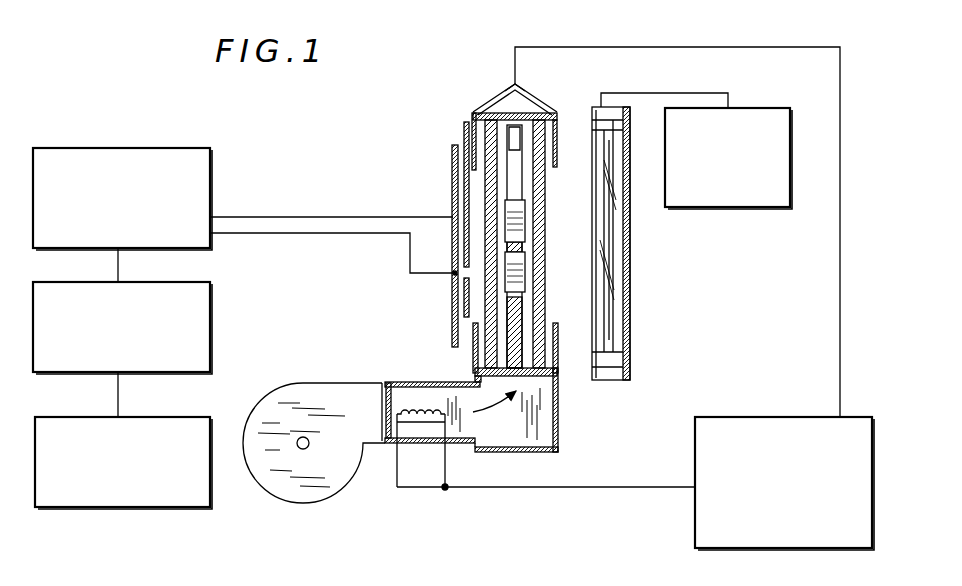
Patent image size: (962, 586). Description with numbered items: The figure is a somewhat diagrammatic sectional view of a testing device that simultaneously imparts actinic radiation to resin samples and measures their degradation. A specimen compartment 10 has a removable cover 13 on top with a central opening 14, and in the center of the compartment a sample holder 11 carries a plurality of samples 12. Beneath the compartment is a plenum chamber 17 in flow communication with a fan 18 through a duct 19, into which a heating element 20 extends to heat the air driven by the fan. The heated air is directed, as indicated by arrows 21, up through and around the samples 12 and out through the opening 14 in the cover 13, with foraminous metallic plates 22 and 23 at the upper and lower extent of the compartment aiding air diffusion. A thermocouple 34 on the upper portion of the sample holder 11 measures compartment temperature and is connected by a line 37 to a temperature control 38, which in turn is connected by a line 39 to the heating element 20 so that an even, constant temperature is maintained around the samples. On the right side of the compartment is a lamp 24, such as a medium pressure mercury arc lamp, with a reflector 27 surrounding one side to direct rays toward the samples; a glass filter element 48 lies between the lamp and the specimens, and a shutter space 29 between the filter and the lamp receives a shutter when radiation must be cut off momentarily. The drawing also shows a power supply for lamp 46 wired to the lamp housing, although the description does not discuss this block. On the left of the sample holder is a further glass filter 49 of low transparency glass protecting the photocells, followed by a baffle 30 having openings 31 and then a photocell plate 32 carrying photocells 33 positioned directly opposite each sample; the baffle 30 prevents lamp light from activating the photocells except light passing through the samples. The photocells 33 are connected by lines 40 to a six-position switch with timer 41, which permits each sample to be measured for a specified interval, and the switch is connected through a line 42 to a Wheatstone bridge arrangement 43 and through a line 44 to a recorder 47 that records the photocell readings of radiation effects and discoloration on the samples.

The specimen compartment 10 is at (478, 240).
The sample holder 11 is at (549, 235).
The samples 12 is at (520, 213).
The removable cover 13 is at (537, 104).
The opening 14 is at (511, 86).
The plenum chamber 17 is at (558, 445).
The fan 18 is at (318, 505).
The duct 19 is at (415, 383).
The heating element 20 is at (441, 412).
The arrows 21 is at (497, 412).
The foraminous metallic plate 22 is at (478, 110).
The foraminous metallic plate 23 is at (555, 380).
The lamp 24 is at (612, 352).
The reflector 27 is at (622, 346).
The shutter space 29 is at (553, 178).
The baffle 30 is at (475, 328).
The openings 31 is at (462, 226).
The photocell plate 32 is at (452, 193).
The photocells 33 is at (458, 276).
The thermocouple 34 is at (516, 138).
The line 37 is at (840, 362).
The temperature control 38 is at (736, 550).
The line 39 is at (550, 488).
The lines 40 is at (326, 216).
The six-position switch with timer 41 is at (211, 185).
The line 42 is at (119, 266).
The Wheatstone bridge arrangement 43 is at (211, 341).
The line 44 is at (119, 398).
The power supply for lamp 46 is at (774, 208).
The recorder 47 is at (204, 510).
The glass filter element 48 is at (545, 256).
The glass filter 49 is at (490, 178).